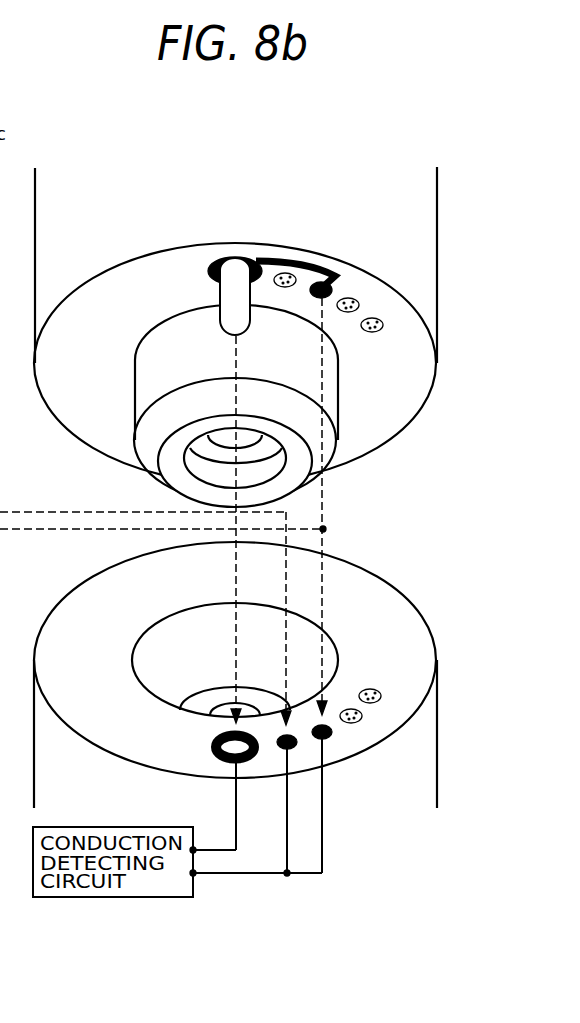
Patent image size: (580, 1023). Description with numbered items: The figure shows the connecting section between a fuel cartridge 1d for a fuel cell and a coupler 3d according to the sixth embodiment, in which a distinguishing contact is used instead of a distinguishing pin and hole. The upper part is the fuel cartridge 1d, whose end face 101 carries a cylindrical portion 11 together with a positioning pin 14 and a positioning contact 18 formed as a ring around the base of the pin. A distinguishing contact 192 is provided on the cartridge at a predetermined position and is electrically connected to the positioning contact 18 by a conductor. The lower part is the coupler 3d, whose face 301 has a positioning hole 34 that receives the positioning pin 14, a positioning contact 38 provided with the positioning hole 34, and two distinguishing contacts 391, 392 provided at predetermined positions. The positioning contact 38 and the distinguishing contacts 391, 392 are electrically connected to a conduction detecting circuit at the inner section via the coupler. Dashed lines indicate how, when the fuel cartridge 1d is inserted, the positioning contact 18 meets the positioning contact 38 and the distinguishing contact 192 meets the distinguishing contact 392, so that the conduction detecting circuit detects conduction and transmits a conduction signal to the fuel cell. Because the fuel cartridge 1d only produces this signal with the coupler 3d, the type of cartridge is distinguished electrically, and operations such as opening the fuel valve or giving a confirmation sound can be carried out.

The fuel cartridge 1d is at (367, 173).
The end face 101 is at (170, 262).
The cylindrical portion 11 is at (160, 333).
The positioning pin 14 is at (230, 280).
The positioning contact 18 is at (247, 260).
The distinguishing contact 192 is at (337, 283).
The coupler 3d is at (388, 812).
The face 301 is at (127, 572).
The positioning hole 34 is at (213, 760).
The positioning contact 38 is at (252, 760).
The distinguishing contact 391 is at (295, 747).
The distinguishing contact 392 is at (330, 735).